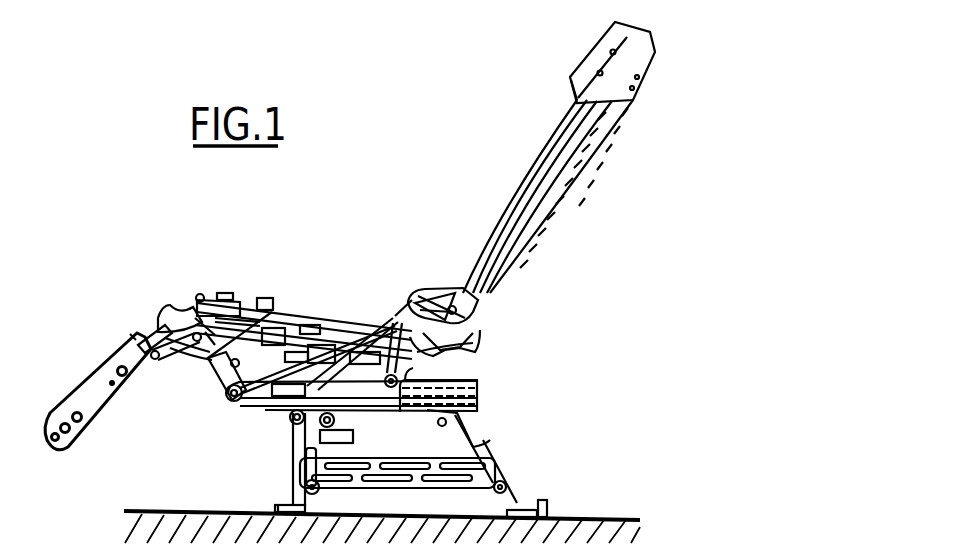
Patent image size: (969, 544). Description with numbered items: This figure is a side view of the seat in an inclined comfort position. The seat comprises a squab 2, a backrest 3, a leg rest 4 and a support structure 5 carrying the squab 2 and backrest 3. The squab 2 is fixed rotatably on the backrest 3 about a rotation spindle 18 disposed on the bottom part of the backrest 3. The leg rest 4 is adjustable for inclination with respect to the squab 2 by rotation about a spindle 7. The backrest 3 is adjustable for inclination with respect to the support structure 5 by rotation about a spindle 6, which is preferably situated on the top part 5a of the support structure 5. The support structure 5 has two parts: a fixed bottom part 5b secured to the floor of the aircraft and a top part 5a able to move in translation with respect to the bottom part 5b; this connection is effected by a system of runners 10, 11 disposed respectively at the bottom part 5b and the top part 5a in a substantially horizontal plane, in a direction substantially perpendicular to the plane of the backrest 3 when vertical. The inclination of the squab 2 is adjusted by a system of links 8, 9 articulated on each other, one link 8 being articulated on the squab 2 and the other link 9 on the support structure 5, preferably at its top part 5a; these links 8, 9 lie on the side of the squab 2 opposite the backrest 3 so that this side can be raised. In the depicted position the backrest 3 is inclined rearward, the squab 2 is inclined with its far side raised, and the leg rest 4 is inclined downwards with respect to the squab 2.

The squab 2 is at (330, 300).
The backrest 3 is at (566, 210).
The leg rest 4 is at (84, 364).
The support structure 5 is at (505, 452).
The top part 5a is at (383, 317).
The fixed bottom part 5b is at (458, 432).
The spindle 6 is at (412, 293).
The spindle 7 is at (175, 352).
The link 8 is at (205, 350).
The link 9 is at (228, 386).
The runner 10 is at (477, 380).
The runner 11 is at (413, 368).
The rotation spindle 18 is at (477, 353).